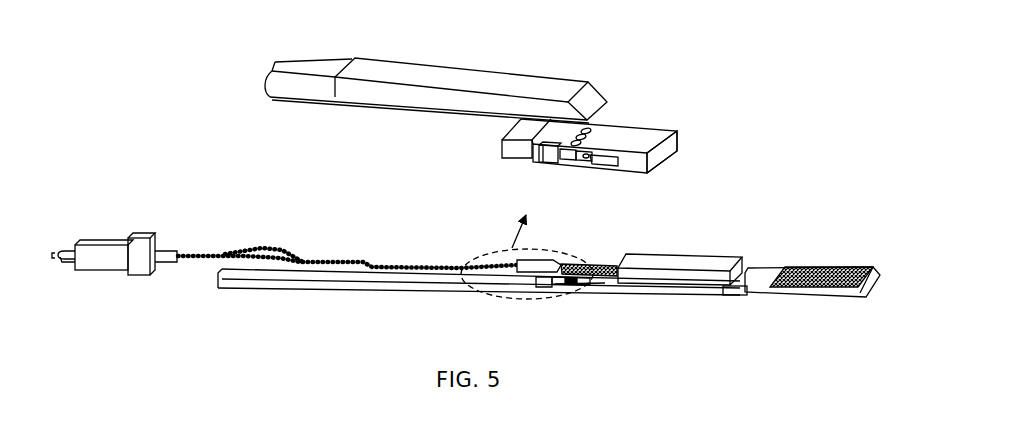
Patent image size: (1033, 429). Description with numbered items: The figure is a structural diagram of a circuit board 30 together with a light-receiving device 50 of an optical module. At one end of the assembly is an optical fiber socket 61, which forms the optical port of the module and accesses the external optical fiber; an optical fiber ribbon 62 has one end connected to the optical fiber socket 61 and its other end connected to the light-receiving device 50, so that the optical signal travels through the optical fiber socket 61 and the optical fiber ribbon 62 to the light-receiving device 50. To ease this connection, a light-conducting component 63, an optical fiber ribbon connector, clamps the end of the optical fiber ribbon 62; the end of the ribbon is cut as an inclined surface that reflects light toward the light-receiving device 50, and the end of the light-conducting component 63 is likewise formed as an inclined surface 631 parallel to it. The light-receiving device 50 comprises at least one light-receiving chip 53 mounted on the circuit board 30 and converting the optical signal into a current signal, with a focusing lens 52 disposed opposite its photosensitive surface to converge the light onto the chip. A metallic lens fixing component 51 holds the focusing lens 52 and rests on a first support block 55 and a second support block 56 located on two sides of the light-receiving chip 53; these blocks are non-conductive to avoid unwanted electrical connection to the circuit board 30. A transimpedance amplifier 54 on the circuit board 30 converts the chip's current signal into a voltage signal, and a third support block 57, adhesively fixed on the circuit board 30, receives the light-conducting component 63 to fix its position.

The circuit board 30 is at (757, 290).
The light-receiving device 50 is at (580, 285).
The lens fixing component 51 is at (591, 153).
The focusing lens 52 is at (567, 160).
The light-receiving chip 53 is at (584, 162).
The transimpedance amplifier 54 is at (606, 165).
The first support block 55 is at (549, 163).
The second support block 56 is at (648, 166).
The third support block 57 is at (513, 159).
The optical fiber socket 61 is at (108, 263).
The optical fiber ribbon 62 is at (303, 263).
The light-conducting component 63 is at (453, 74).
The inclined surface 631 is at (592, 101).